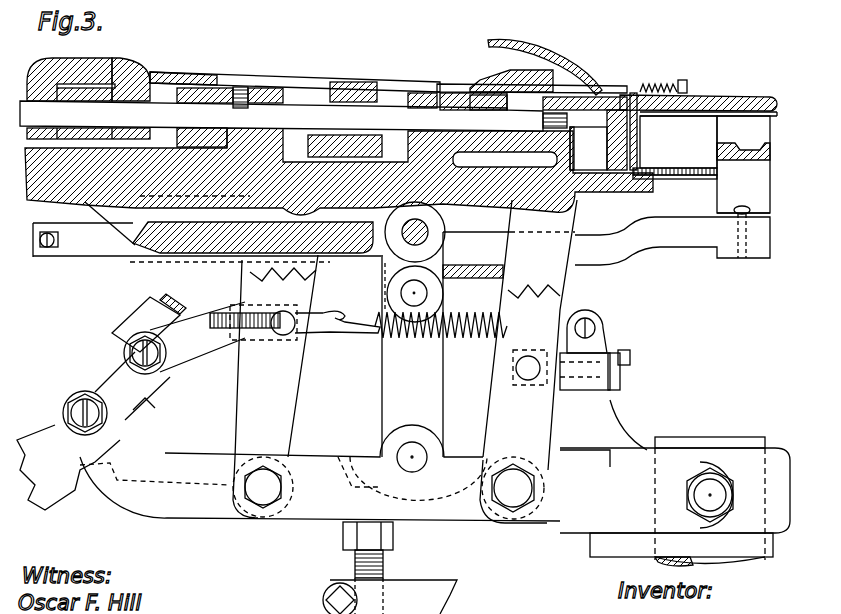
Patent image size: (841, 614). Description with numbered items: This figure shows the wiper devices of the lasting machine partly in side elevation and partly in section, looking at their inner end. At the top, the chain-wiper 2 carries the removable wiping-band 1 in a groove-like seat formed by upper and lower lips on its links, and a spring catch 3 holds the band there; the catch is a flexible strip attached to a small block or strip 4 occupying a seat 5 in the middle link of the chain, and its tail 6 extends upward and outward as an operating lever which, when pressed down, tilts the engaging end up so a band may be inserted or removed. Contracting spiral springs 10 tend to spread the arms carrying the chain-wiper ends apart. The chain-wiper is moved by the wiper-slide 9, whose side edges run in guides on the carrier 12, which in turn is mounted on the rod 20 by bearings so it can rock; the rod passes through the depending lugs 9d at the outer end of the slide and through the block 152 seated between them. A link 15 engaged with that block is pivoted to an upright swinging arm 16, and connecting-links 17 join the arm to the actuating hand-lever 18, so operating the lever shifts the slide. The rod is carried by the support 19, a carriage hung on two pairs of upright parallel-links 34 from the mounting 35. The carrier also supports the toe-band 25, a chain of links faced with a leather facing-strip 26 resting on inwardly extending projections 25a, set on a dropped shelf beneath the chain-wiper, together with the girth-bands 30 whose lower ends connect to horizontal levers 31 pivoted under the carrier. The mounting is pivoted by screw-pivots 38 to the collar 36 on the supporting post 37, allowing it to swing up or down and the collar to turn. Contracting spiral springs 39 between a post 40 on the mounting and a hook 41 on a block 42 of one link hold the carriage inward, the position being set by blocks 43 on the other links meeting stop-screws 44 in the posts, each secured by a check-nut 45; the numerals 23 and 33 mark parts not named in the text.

The wiping-band 1 is at (735, 108).
The chain-wiper 2 is at (705, 94).
The spring catch 3 is at (628, 100).
The block or strip 4 is at (500, 78).
The seat 5 is at (594, 97).
The tail 6 is at (525, 40).
The wiper-slide 9 is at (182, 72).
The depending lugs 9d is at (27, 82).
The contracting spiral springs 10 is at (662, 83).
The carrier 12 is at (240, 87).
The link 15 is at (167, 250).
The upright swinging arm 16 is at (385, 375).
The connecting-links 17 is at (215, 363).
The actuating hand-lever 18 is at (42, 425).
The support 19 is at (273, 88).
The rod 20 is at (292, 110).
The band 23 is at (673, 178).
The toe-band 25 is at (583, 148).
The inwardly extending projections 25a is at (656, 170).
The facing-strip 26 is at (641, 143).
The girth-bands 30 is at (745, 125).
The horizontal levers 31 is at (110, 253).
The screw 33 is at (60, 248).
The upright parallel-links 34 is at (583, 250).
The mounting 35 is at (468, 522).
The collar 36 is at (607, 560).
The supporting post 37 is at (705, 437).
The screw-pivots 38 is at (690, 492).
The contracting spiral springs 39 is at (475, 338).
The post 40 is at (610, 342).
The hook 41 is at (326, 336).
The block 42 is at (272, 350).
The blocks 43 is at (532, 386).
The stop-screws 44 is at (632, 372).
The check-nut 45 is at (625, 390).
The block 152 is at (113, 58).